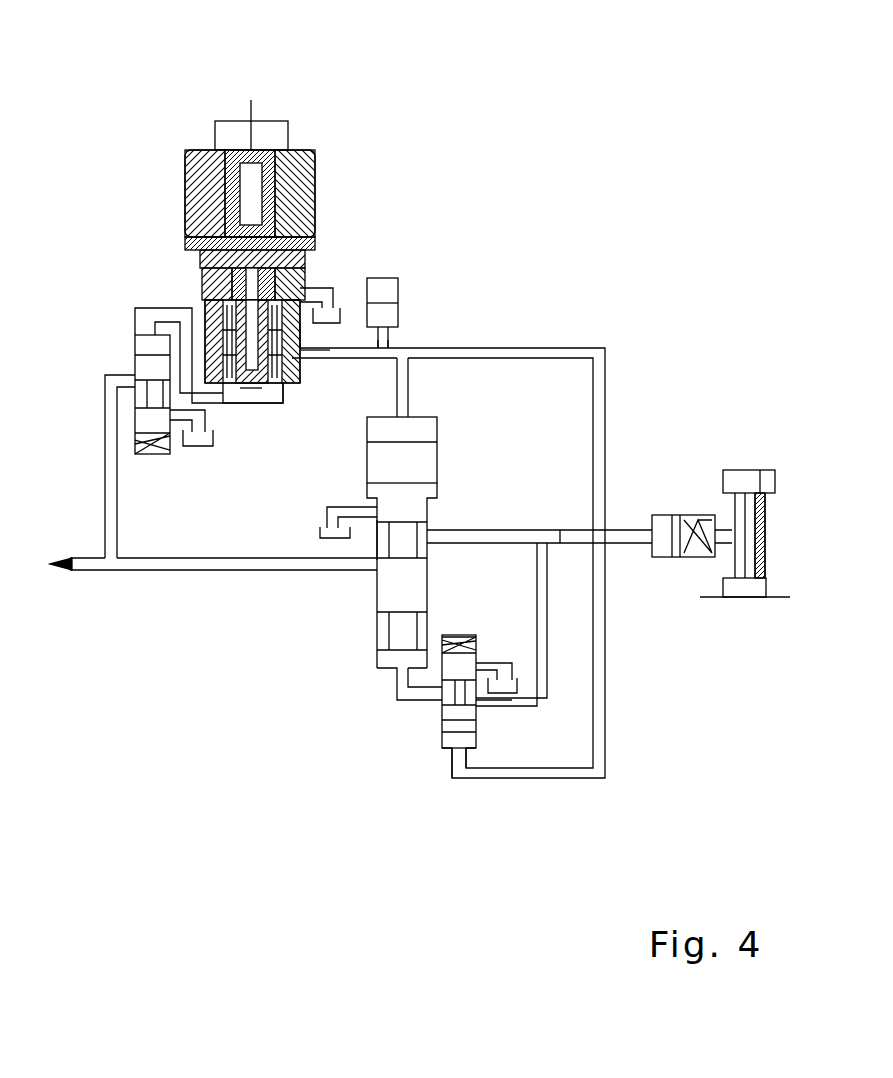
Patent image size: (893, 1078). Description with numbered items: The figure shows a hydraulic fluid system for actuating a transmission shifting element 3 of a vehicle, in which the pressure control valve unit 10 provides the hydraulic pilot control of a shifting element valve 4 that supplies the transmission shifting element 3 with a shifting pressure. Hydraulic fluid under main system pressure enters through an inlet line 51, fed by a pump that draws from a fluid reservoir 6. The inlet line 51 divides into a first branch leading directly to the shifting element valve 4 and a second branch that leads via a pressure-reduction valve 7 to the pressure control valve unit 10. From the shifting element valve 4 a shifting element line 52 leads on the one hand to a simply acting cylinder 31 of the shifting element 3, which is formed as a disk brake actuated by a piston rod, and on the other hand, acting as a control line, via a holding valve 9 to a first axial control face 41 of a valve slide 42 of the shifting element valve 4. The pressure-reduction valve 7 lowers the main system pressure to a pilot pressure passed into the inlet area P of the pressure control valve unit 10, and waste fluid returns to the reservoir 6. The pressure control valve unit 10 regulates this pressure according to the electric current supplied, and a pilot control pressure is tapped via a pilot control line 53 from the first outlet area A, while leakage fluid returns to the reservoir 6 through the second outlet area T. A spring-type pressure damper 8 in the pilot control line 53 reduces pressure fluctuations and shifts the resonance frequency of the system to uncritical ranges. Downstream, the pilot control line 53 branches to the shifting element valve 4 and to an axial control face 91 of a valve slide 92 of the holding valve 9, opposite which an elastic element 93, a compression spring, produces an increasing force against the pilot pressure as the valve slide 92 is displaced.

The transmission shifting element 3 is at (772, 525).
The shifting element valve 4 is at (377, 539).
The fluid reservoir 6 is at (197, 448).
The pressure-reduction valve 7 is at (124, 349).
The spring-type pressure damper 8 is at (387, 297).
The holding valve 9 is at (436, 710).
The pressure control valve unit 10 is at (294, 127).
The simply acting cylinder 31 is at (663, 558).
The first axial control face 41 is at (396, 656).
The valve slide 42 is at (415, 435).
The inlet line 51 is at (87, 562).
The shifting element line 52 is at (567, 545).
The pilot control line 53 is at (392, 349).
The axial control face 91 is at (464, 717).
The valve slide 92 is at (510, 698).
The elastic element 93 is at (449, 636).
The inlet area P is at (244, 392).
The first outlet area A is at (322, 362).
The second outlet area T is at (338, 321).